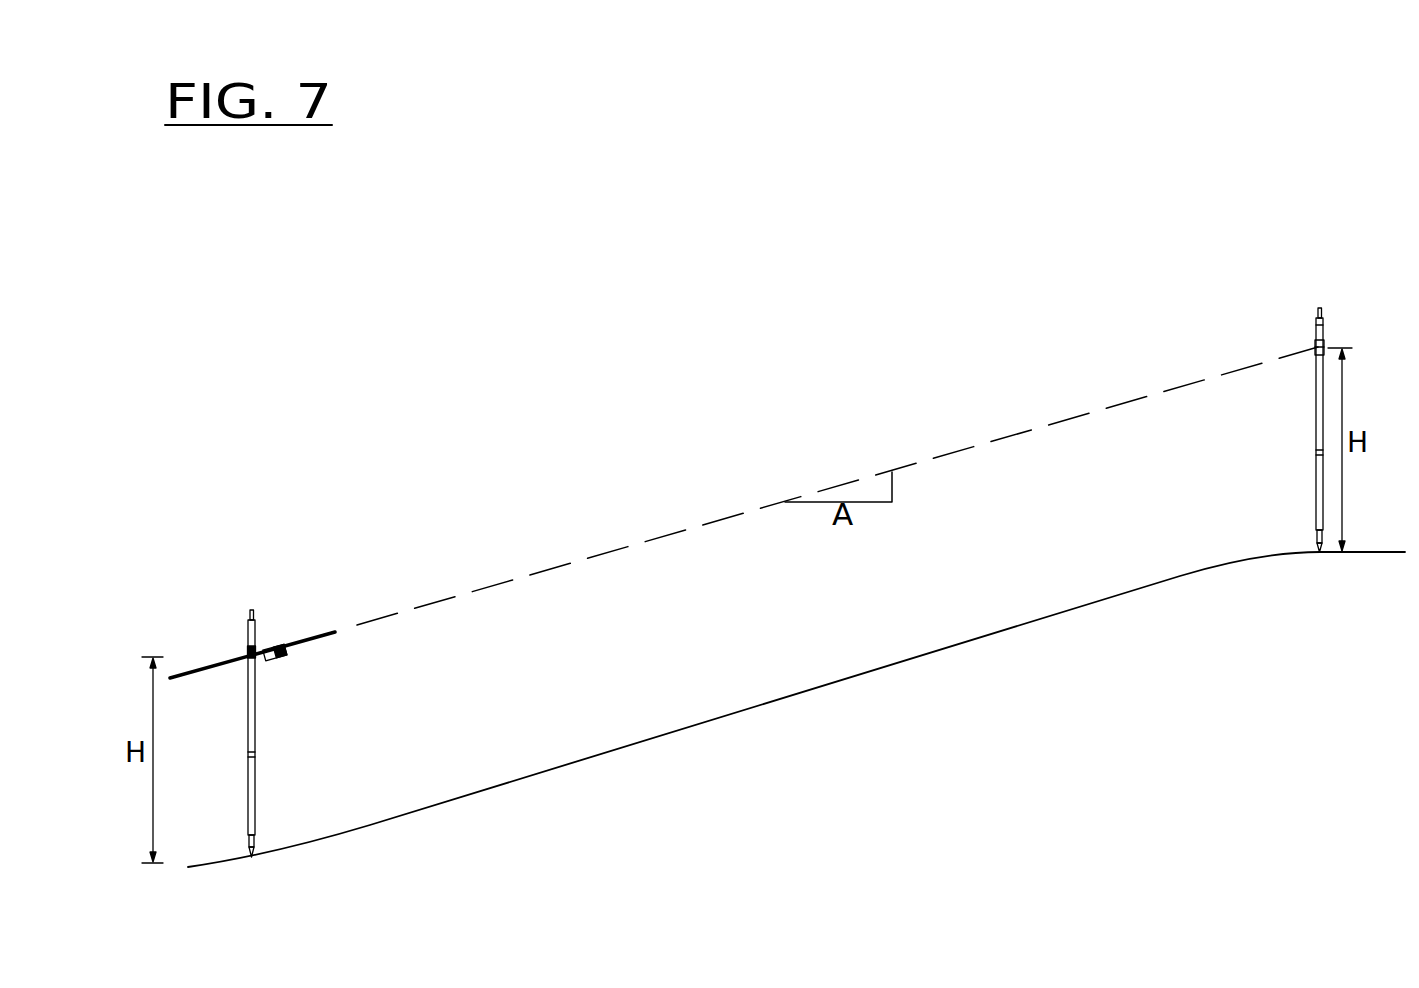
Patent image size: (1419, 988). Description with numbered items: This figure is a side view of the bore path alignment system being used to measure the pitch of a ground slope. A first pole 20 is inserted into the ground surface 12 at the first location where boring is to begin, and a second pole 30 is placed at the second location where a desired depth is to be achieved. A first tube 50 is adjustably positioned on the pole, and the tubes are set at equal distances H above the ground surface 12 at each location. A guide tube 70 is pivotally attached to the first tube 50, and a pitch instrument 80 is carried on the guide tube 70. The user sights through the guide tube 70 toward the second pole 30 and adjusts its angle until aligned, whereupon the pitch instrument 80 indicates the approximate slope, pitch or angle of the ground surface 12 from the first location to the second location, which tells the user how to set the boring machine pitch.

The ground surface 12 is at (527, 773).
The first pole 20 is at (264, 771).
The second pole 30 is at (1310, 327).
The first tube 50 is at (1328, 345).
The guide tube 70 is at (315, 630).
The pitch instrument 80 is at (268, 647).